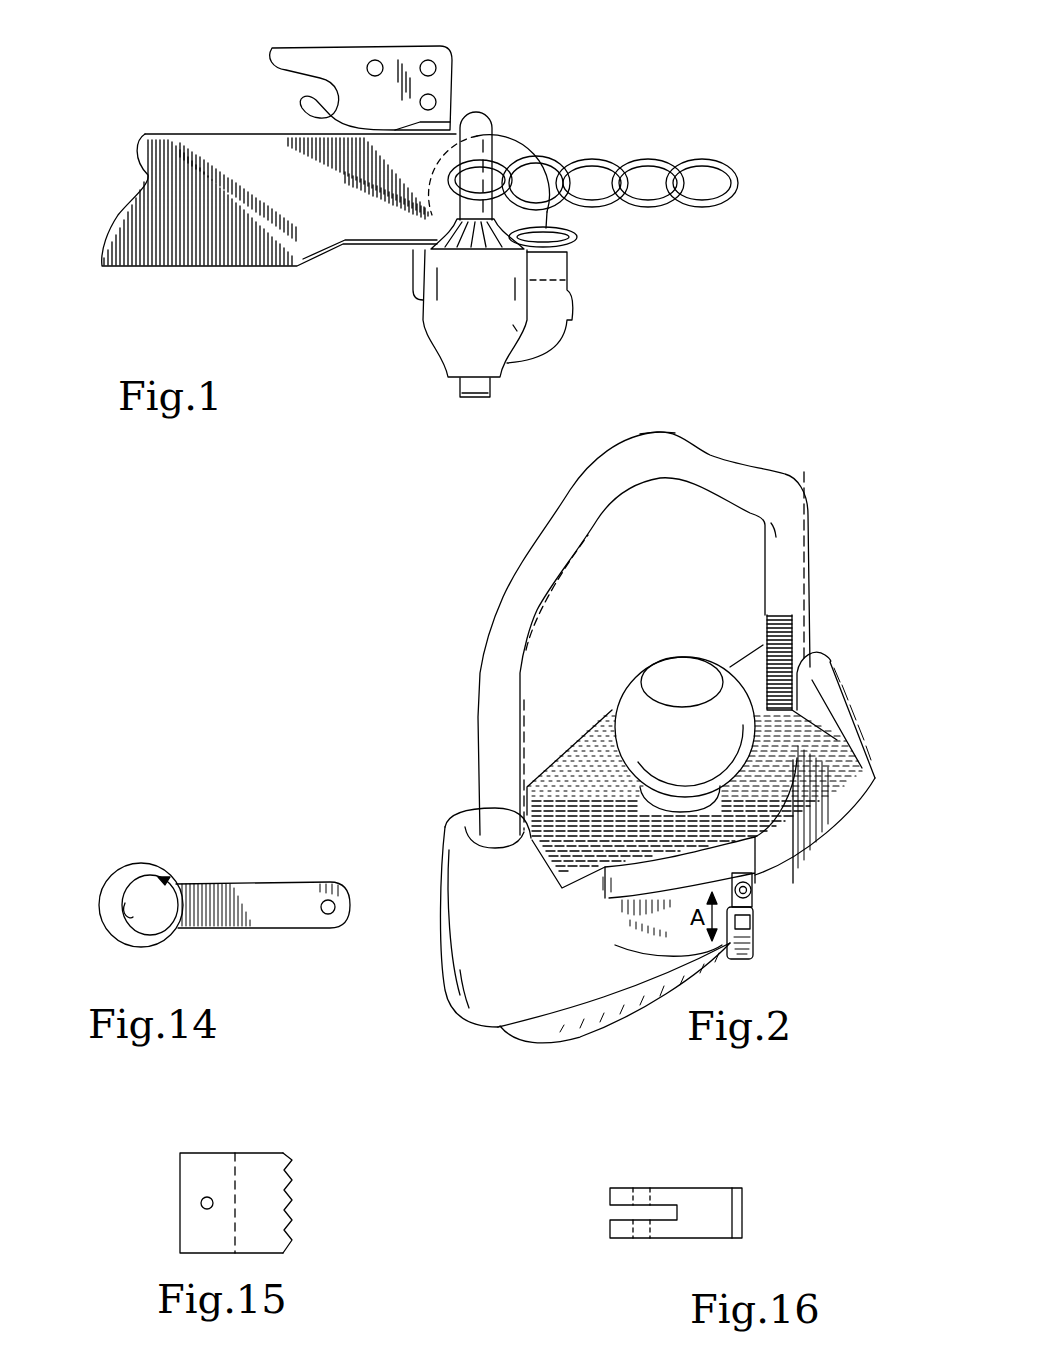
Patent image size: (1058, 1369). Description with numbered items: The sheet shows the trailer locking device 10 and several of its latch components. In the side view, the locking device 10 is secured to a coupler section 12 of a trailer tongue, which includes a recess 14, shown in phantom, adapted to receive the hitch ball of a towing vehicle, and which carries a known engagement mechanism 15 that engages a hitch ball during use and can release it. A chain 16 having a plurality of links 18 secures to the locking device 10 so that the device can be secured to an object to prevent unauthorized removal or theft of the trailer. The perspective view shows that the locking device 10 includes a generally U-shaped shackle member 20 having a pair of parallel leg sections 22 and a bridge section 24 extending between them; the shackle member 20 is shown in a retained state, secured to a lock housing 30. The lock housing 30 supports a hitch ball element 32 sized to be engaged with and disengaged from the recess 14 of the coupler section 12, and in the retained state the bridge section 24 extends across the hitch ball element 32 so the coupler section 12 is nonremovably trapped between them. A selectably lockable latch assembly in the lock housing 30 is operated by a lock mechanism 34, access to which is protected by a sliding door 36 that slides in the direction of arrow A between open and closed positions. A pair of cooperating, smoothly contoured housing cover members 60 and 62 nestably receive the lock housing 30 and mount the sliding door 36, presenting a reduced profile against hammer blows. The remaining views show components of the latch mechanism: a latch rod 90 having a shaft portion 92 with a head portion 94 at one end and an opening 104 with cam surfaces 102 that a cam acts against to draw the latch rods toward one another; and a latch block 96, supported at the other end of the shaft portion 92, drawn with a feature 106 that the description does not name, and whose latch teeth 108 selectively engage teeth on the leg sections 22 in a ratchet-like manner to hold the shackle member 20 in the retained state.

In FIG. 1, the locking device 10 is at (383, 352).
In FIG. 2, the locking device 10 is at (437, 627).
In FIG. 1, the coupler section 12 is at (230, 100).
In FIG. 1, the recess 14 is at (510, 143).
In FIG. 1, the engagement mechanism 15 is at (470, 40).
In FIG. 1, the chain 16 is at (668, 135).
In FIG. 1, the links 18 is at (600, 213).
In FIG. 2, the shackle member 20 is at (664, 605).
In FIG. 2, the leg sections 22 is at (778, 587).
In FIG. 2, the bridge section 24 is at (643, 453).
In FIG. 2, the lock housing 30 is at (487, 1042).
In FIG. 2, the hitch ball element 32 is at (633, 703).
In FIG. 2, the lock mechanism 34 is at (757, 890).
In FIG. 1, the sliding door 36 is at (570, 297).
In FIG. 2, the sliding door 36 is at (757, 937).
In FIG. 2, the housing cover member 60 is at (462, 942).
In FIG. 2, the housing cover member 62 is at (853, 718).
In FIG. 14, the latch rod 90 is at (209, 890).
In FIG. 14, the shaft portion 92 is at (247, 930).
In FIG. 14, the head portion 94 is at (140, 862).
In FIG. 15, the latch block 96 is at (266, 1162).
In FIG. 16, the latch block 96 is at (738, 1192).
In FIG. 14, the cam surfaces 102 is at (127, 918).
In FIG. 14, the openings 104 is at (160, 885).
In FIG. 15, the block body 106 is at (203, 1163).
In FIG. 16, the block body 106 is at (657, 1188).
In FIG. 15, the latch teeth 108 is at (293, 1187).
In FIG. 16, the latch teeth 108 is at (742, 1208).